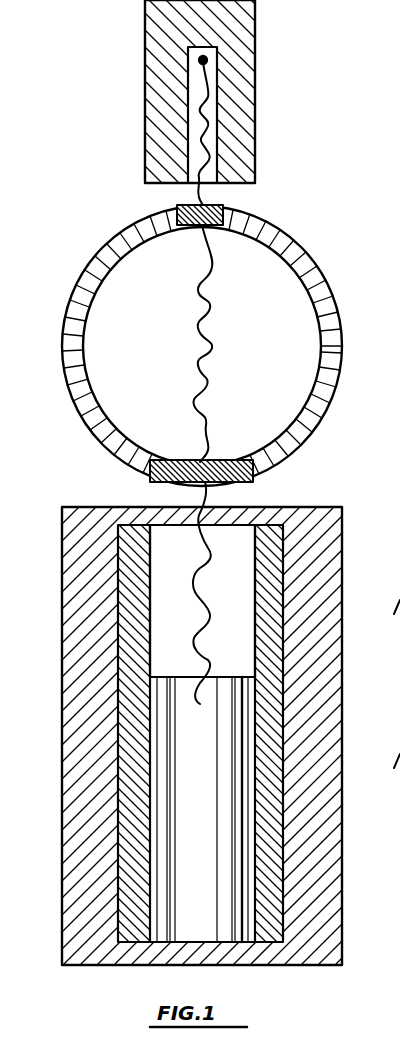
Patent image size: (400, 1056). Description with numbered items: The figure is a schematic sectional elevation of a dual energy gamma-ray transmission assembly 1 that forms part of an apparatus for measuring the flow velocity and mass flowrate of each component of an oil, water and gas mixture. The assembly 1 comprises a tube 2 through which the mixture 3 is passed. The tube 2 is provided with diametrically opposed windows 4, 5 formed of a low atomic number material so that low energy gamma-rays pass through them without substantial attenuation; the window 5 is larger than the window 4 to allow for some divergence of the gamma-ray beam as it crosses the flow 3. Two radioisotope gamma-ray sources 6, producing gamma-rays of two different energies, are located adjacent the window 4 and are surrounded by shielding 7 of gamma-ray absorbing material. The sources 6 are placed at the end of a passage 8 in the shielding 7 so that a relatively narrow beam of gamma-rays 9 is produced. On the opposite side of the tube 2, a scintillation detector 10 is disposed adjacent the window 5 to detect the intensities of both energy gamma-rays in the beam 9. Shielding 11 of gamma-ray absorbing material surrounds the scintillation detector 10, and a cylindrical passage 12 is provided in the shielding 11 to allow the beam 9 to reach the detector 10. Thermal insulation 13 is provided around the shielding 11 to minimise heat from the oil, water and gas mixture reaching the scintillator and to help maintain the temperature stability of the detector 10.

The dual energy gamma-ray transmission assembly 1 is at (228, 106).
The tube 2 is at (290, 246).
The mixture 3 is at (170, 343).
The window 4 is at (207, 206).
The window 5 is at (233, 483).
The radioisotope gamma-ray sources 6 is at (200, 60).
The shielding 7 is at (242, 78).
The passage 8 is at (187, 150).
The beam of gamma-rays 9 is at (205, 364).
The scintillation detector 10 is at (227, 846).
The shielding 11 is at (272, 713).
The cylindrical passage 12 is at (165, 585).
The thermal insulation 13 is at (399, 482).